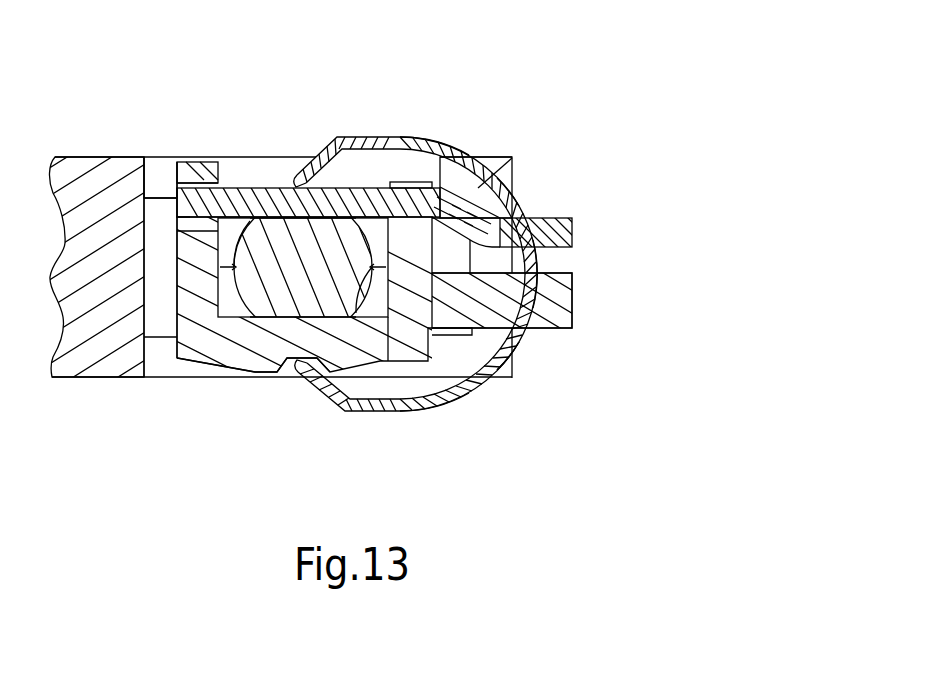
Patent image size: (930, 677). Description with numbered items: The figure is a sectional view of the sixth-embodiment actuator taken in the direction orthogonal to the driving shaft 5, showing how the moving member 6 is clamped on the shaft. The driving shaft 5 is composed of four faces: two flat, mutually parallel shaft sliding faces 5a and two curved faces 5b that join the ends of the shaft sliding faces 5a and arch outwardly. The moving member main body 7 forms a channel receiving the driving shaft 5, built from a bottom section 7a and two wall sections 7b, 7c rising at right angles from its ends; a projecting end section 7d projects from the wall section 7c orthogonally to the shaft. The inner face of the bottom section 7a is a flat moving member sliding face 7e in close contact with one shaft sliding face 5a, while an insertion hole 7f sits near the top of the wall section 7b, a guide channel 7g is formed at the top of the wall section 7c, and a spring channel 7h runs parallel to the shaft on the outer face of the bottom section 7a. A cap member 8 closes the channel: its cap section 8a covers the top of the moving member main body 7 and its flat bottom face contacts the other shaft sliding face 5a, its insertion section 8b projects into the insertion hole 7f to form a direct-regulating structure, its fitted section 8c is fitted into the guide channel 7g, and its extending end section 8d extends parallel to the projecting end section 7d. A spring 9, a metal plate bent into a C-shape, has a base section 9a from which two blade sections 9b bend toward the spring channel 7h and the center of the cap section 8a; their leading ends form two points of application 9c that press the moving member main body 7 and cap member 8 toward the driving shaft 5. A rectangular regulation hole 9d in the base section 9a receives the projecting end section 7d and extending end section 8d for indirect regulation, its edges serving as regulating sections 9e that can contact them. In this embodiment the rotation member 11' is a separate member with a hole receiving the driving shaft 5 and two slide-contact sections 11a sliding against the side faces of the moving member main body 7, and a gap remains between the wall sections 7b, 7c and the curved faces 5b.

The driving shaft 5 is at (346, 320).
The shaft sliding face 5a is at (284, 190).
The curved face 5b is at (366, 216).
The moving member 6 is at (502, 142).
The moving member main body 7 is at (255, 374).
The bottom section 7a is at (222, 360).
The wall section 7b is at (197, 162).
The wall section 7c is at (408, 182).
The projecting end section 7d is at (572, 303).
The moving member sliding face 7e is at (384, 322).
The insertion hole 7f is at (176, 188).
The guide channel 7g is at (512, 158).
The spring channel 7h is at (290, 378).
The cap member 8 is at (338, 185).
The cap section 8a is at (253, 188).
The insertion section 8b is at (150, 195).
The fitted section 8c is at (437, 180).
The extending end section 8d is at (548, 218).
The spring 9 is at (455, 143).
The base section 9a is at (540, 262).
The blade section 9b is at (432, 140).
The point of application 9c is at (300, 178).
The regulation hole 9d is at (530, 336).
The regulating section 9e is at (520, 195).
The rotation member 11' is at (276, 287).
The slide-contact section 11a is at (167, 378).